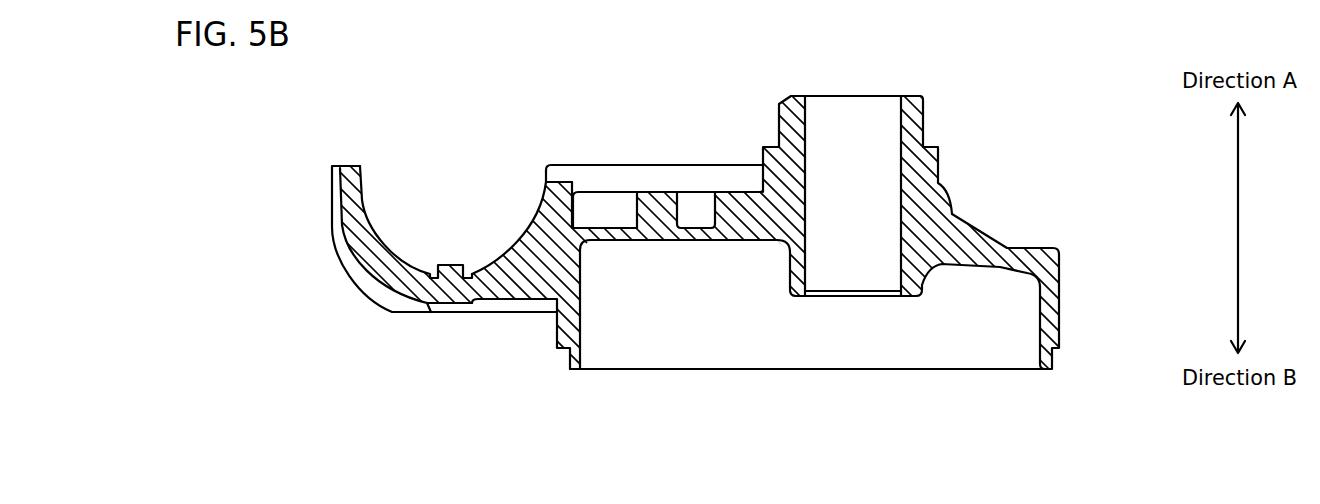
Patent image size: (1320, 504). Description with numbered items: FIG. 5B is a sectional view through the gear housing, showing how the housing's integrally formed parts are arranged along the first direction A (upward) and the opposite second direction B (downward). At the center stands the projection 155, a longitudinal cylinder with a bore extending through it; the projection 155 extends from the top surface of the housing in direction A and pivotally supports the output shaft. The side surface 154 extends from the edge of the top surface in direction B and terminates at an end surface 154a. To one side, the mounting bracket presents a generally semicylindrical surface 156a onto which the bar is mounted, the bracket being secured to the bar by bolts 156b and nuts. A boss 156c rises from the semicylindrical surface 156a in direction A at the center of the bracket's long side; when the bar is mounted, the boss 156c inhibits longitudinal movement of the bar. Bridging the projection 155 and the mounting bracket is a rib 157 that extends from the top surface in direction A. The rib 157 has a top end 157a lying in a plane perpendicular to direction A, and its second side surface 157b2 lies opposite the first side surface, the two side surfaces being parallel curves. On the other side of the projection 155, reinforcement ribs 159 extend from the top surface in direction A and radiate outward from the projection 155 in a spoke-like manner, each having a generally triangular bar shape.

The side surface 154 is at (1055, 308).
The end surface 154a is at (570, 370).
The projection 155 is at (779, 108).
The semicylindrical surface 156a is at (523, 232).
The bolts 156b is at (343, 165).
The boss 156c is at (445, 265).
The rib 157 is at (572, 160).
The top end 157a is at (683, 163).
The second side surface 157b2 is at (653, 183).
The reinforcement ribs 159 is at (977, 230).